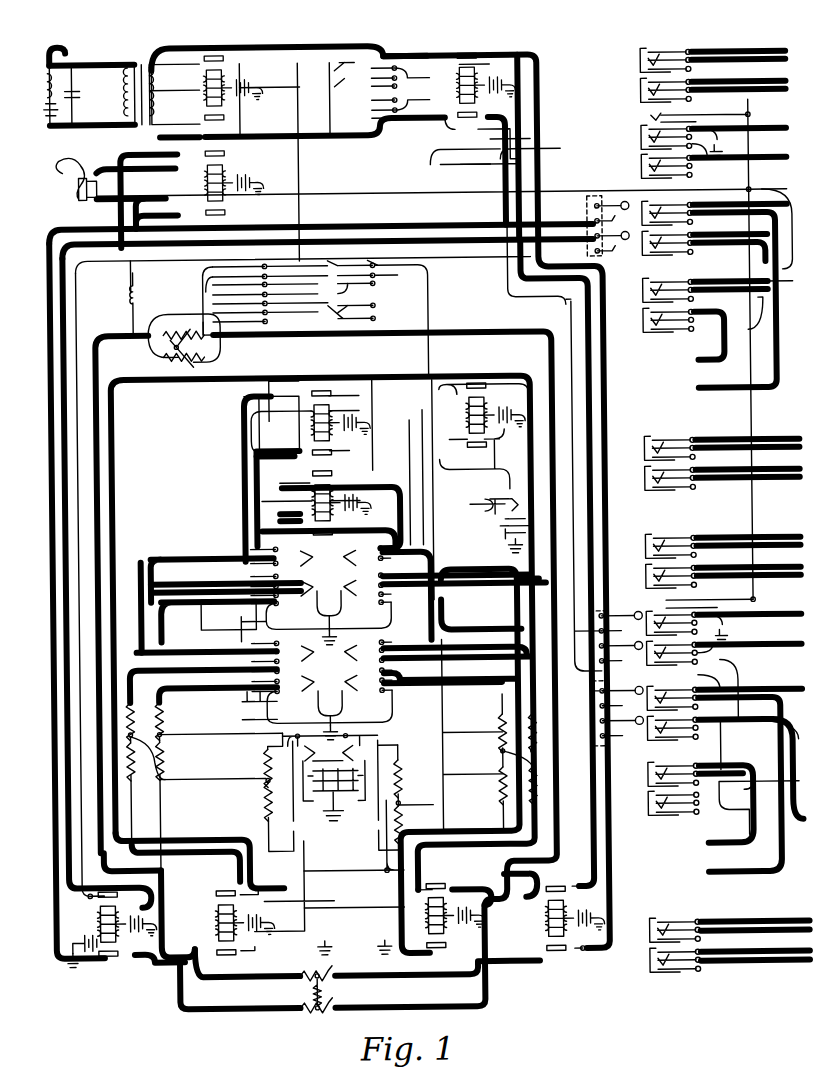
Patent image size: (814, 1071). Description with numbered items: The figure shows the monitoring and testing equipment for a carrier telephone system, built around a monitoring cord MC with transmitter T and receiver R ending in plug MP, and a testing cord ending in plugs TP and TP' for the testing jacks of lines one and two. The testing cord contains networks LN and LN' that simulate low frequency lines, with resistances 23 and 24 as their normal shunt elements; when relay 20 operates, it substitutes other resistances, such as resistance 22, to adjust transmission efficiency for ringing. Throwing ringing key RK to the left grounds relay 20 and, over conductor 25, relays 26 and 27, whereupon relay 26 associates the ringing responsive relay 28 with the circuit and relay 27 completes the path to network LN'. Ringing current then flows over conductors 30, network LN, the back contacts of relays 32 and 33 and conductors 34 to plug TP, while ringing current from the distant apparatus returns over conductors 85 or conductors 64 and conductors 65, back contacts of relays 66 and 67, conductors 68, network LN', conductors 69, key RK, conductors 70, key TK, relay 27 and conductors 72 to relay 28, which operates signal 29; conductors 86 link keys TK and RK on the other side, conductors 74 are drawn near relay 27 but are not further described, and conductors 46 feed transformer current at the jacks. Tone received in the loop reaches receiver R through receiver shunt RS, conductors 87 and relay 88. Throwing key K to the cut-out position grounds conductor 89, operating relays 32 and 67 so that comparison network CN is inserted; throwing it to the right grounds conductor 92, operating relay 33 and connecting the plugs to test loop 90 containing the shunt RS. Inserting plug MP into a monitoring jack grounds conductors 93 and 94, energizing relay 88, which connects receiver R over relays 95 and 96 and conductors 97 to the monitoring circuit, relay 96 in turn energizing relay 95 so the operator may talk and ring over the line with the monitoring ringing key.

The relay 20 is at (330, 770).
The resistance 22 is at (402, 790).
The resistance 23 is at (262, 768).
The resistance 24 is at (400, 768).
The conductor 25 is at (445, 612).
The relay 26 is at (312, 430).
The relay 27 is at (312, 500).
The ringing responsive relay 28 is at (490, 425).
The signal 29 is at (490, 507).
The conductors 30 is at (178, 655).
The relay 32 is at (212, 914).
The relay 33 is at (116, 918).
The conductors 34 is at (65, 475).
The conductors 46 is at (347, 398).
The conductors 64 is at (788, 723).
The conductors 65 is at (590, 870).
The relay 66 is at (542, 918).
The relay 67 is at (444, 913).
The conductors 68 is at (520, 785).
The conductors 69 is at (455, 655).
The conductors 70 is at (510, 612).
The conductors 72 is at (245, 470).
The conductor 74 is at (355, 530).
The conductors 85 is at (795, 196).
The conductors 86 is at (205, 648).
The conductors 87 is at (122, 320).
The relay 88 is at (209, 180).
The conductor 89 is at (80, 520).
The test loop 90 is at (530, 510).
The conductor 92 is at (445, 525).
The conductors 93 is at (752, 415).
The conductors 94 is at (110, 258).
The relay 95 is at (209, 88).
The relay 96 is at (486, 92).
The conductors 97 is at (600, 430).